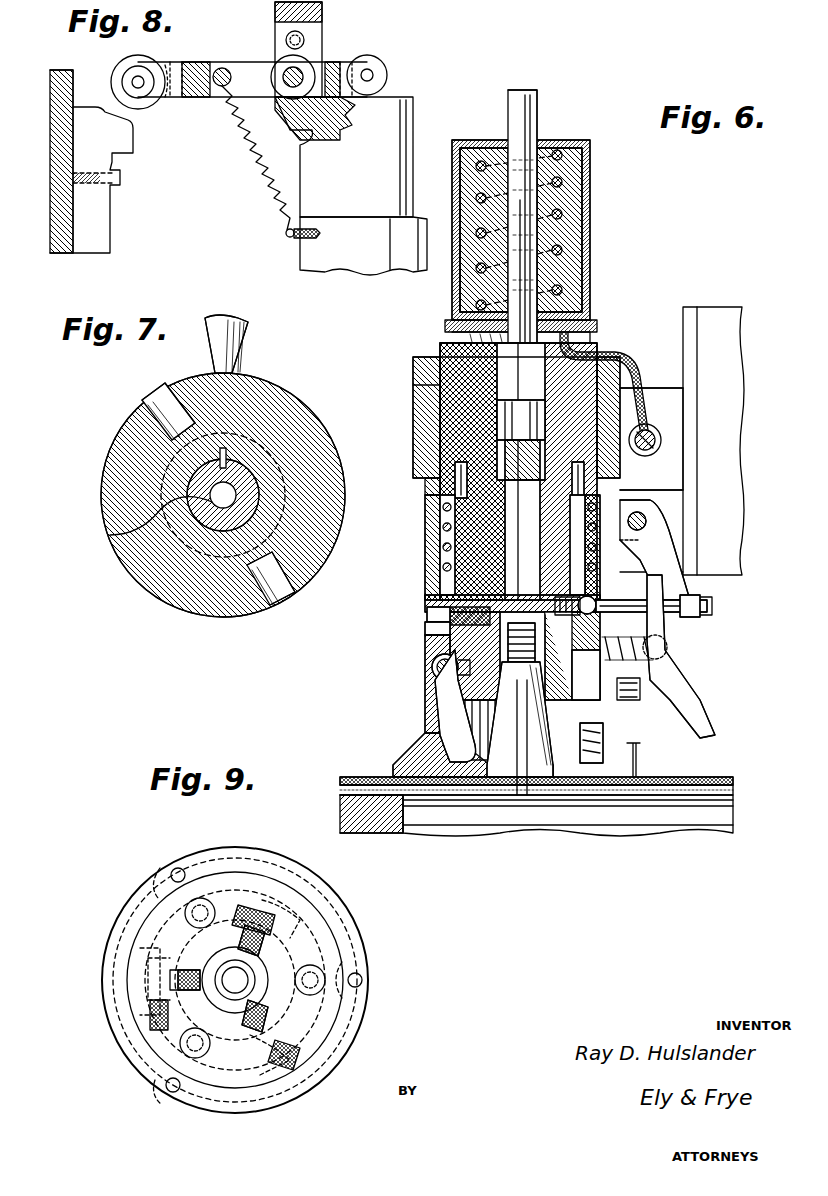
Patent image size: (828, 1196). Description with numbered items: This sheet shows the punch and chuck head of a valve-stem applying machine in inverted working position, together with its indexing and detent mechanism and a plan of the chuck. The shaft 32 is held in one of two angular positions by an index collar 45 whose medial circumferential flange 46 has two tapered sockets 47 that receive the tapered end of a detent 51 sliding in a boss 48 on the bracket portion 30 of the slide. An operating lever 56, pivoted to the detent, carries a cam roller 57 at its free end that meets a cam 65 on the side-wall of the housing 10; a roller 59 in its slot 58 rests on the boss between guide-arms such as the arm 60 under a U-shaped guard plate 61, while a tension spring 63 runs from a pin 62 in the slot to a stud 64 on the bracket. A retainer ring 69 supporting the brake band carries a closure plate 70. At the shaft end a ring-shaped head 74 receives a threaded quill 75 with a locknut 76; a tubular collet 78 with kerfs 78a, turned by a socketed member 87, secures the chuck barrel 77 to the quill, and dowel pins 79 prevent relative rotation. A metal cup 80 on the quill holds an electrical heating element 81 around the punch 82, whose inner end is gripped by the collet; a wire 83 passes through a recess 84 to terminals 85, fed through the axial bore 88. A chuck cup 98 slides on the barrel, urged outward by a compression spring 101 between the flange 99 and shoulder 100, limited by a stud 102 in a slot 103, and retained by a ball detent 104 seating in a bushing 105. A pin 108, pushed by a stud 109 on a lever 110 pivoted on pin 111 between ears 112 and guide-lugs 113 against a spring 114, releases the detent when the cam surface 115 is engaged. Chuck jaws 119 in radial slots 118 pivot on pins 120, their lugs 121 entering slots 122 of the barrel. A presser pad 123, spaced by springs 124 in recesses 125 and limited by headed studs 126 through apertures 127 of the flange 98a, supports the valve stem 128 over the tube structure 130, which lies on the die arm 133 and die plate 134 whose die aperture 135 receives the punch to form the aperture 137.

In FIG. 8, the housing 10 is at (60, 70).
In FIG. 8, the bracket portion 30 is at (310, 258).
In FIG. 7, the shaft 32 is at (200, 520).
In FIG. 6, the shaft 32 is at (665, 388).
In FIG. 7, the index collar 45 is at (300, 432).
In FIG. 7, the medial circumferential flange 46 is at (275, 390).
In FIG. 7, the tapered sockets 47 is at (178, 388).
In FIG. 8, the boss 48 is at (413, 115).
In FIG. 8, the detent 51 is at (388, 92).
In FIG. 7, the detent 51 is at (248, 345).
In FIG. 8, the operating lever 56 is at (245, 64).
In FIG. 8, the cam roller 57 is at (155, 63).
In FIG. 8, the slot 58 is at (208, 60).
In FIG. 8, the roller 59 is at (285, 58).
In FIG. 8, the guide-arm 60 is at (316, 44).
In FIG. 8, the U-shaped guard plate 61 is at (322, 14).
In FIG. 8, the pin 62 is at (220, 88).
In FIG. 8, the tension spring 63 is at (242, 152).
In FIG. 8, the stud 64 is at (286, 235).
In FIG. 8, the cam 65 is at (118, 144).
In FIG. 6, the retainer ring 69 is at (712, 600).
In FIG. 6, the closure plate 70 is at (692, 307).
In FIG. 6, the ring-shaped head 74 is at (440, 438).
In FIG. 6, the quill 75 is at (440, 352).
In FIG. 6, the locknut 76 is at (413, 367).
In FIG. 6, the chuck barrel 77 is at (440, 598).
In FIG. 9, the chuck barrel 77 is at (225, 997).
In FIG. 6, the tubular collet 78 is at (440, 540).
In FIG. 6, the kerfs 78a is at (520, 415).
In FIG. 6, the dowel pins 79 is at (455, 492).
In FIG. 6, the metal cup 80 is at (590, 222).
In FIG. 6, the electrical heating element 81 is at (570, 190).
In FIG. 6, the punch 82 is at (545, 115).
In FIG. 6, the conductive wire 83 is at (615, 356).
In FIG. 6, the recess 84 is at (575, 345).
In FIG. 6, the terminals 85 is at (662, 440).
In FIG. 6, the socketed member 87 is at (425, 470).
In FIG. 7, the axial bore 88 is at (110, 535).
In FIG. 6, the axial bore 88 is at (638, 420).
In FIG. 6, the chuck cup 98 is at (425, 648).
In FIG. 9, the chuck cup 98 is at (150, 915).
In FIG. 6, the circumferential flange 98a is at (410, 765).
In FIG. 9, the circumferential flange 98a is at (115, 930).
In FIG. 6, the external peripheral flange 99 is at (425, 512).
In FIG. 6, the circumferential shoulder 100 is at (445, 570).
In FIG. 6, the compression spring 101 is at (440, 555).
In FIG. 6, the stud 102 is at (425, 628).
In FIG. 6, the slot 103 is at (427, 605).
In FIG. 6, the ball detent 104 is at (665, 548).
In FIG. 6, the tubular bushing 105 is at (660, 572).
In FIG. 6, the pin 108 is at (660, 612).
In FIG. 6, the stud 109 is at (705, 615).
In FIG. 6, the lever 110 is at (665, 552).
In FIG. 6, the pivot pin 111 is at (655, 512).
In FIG. 6, the ear 112 is at (672, 525).
In FIG. 6, the guide-lug 113 is at (610, 612).
In FIG. 6, the compression spring 114 is at (650, 660).
In FIG. 6, the cam surface 115 is at (690, 690).
In FIG. 6, the radial slots 118 is at (430, 730).
In FIG. 9, the radial slots 118 is at (170, 980).
In FIG. 6, the chuck jaws 119 is at (440, 705).
In FIG. 9, the chuck jaws 119 is at (148, 990).
In FIG. 6, the pivot pins 120 is at (432, 666).
In FIG. 9, the pivot pins 120 is at (140, 950).
In FIG. 6, the tooth-shaped lug 121 is at (500, 645).
In FIG. 6, the slot 122 is at (458, 680).
In FIG. 6, the presser pad 123 is at (380, 778).
In FIG. 6, the compression springs 124 is at (560, 680).
In FIG. 6, the recesses 125 is at (600, 790).
In FIG. 9, the recesses 125 is at (205, 898).
In FIG. 6, the headed studs 126 is at (640, 755).
In FIG. 9, the apertures 127 is at (172, 868).
In FIG. 6, the valve stem 128 is at (490, 780).
In FIG. 6, the tube structure 130 is at (718, 778).
In FIG. 6, the die arm 133 is at (383, 833).
In FIG. 6, the die plate 134 is at (512, 808).
In FIG. 6, the die aperture 135 is at (548, 777).
In FIG. 6, the aperture 137 is at (520, 795).